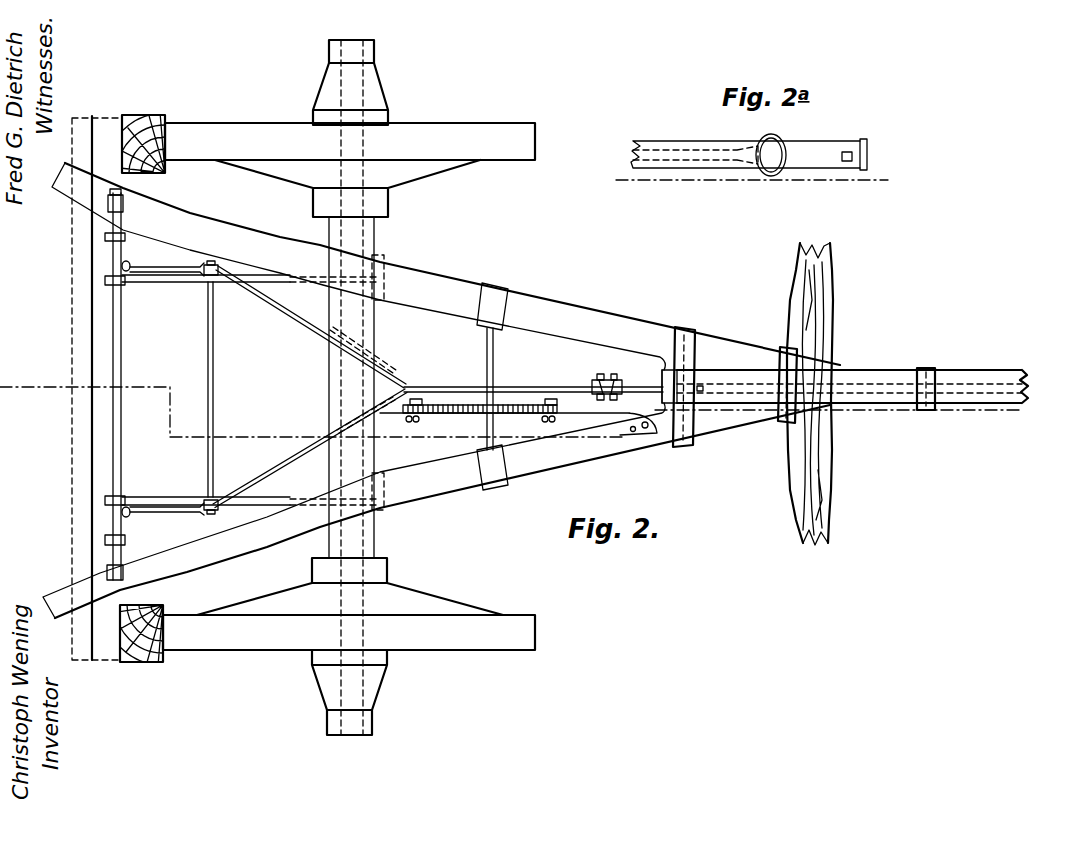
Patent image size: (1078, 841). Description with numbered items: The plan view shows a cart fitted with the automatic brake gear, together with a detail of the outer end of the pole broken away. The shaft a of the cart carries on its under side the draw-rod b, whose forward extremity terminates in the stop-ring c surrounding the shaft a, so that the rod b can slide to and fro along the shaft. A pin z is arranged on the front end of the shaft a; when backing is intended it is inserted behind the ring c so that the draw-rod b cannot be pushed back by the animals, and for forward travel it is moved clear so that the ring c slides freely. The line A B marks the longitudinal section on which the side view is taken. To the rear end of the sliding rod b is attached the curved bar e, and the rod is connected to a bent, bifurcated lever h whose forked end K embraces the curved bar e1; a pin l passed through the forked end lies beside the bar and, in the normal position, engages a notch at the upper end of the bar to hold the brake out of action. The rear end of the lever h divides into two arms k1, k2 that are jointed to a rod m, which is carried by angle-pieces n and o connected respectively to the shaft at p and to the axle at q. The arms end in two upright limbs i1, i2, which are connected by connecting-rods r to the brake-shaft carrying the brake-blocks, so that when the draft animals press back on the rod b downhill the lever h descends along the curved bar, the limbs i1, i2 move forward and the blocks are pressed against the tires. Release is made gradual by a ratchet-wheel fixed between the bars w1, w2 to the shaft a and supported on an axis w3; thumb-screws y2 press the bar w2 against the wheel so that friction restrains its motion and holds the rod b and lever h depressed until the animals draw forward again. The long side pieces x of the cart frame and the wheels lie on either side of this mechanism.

In FIG. 2, the pin z is at (152, 116).
In FIG. 2A, the pin z is at (852, 157).
In FIG. 2, the connection point on shaft p is at (122, 281).
In FIG. 2, the angle-piece n is at (249, 390).
In FIG. 2, the connecting-rod r is at (168, 262).
In FIG. 2, the angle-piece o is at (124, 237).
In FIG. 2, the upright limb i2 is at (216, 276).
In FIG. 2, the upright limb i1 is at (213, 500).
In FIG. 2, the rod m is at (214, 374).
In FIG. 2, the diagonal link k1 is at (311, 327).
In FIG. 2, the diagonal link k2 is at (310, 448).
In FIG. 2, the bent and bifurcated lever h is at (540, 386).
In FIG. 2, the axis w3 is at (493, 355).
In FIG. 2, the bar w2 is at (480, 399).
In FIG. 2, the bar w1 is at (518, 424).
In FIG. 2, the thumb-screws y2 is at (478, 428).
In FIG. 2, the forked end K is at (593, 382).
In FIG. 2, the curved bar e is at (597, 380).
In FIG. 2, the curved bar e1 is at (614, 380).
In FIG. 2, the pin l is at (601, 379).
In FIG. 2, the side beam x is at (441, 390).
In FIG. 2, the connection point on axle q is at (383, 262).
In FIG. 2, the draw-rod b is at (962, 388).
In FIG. 2A, the draw-rod b is at (669, 158).
In FIG. 2, the shaft a is at (849, 391).
In FIG. 2A, the stop-ring c is at (771, 162).
In FIG. 2, the section line end A is at (1012, 406).
In FIG. 2A, the section line end A is at (882, 176).
In FIG. 2A, the section line end B is at (622, 176).